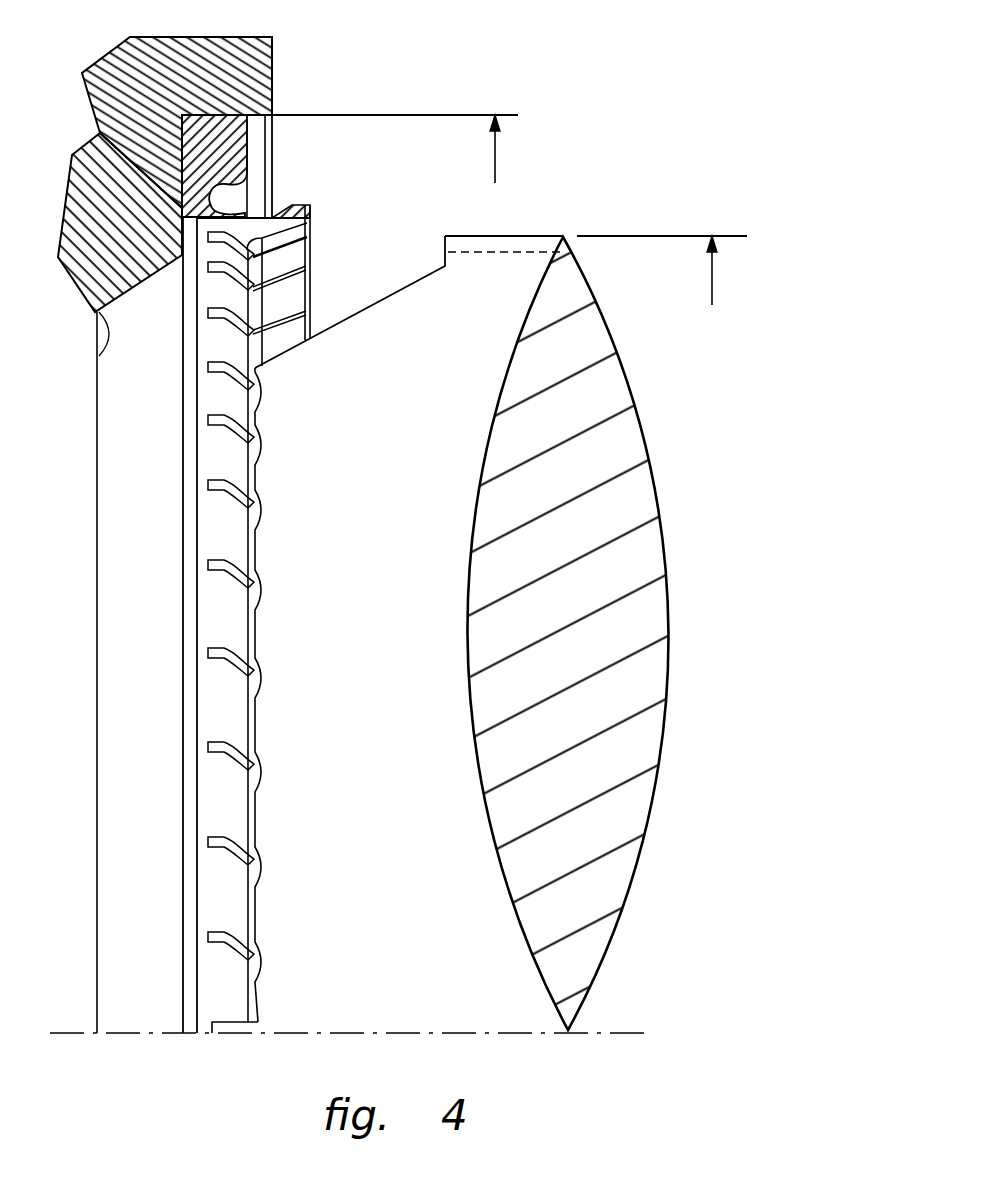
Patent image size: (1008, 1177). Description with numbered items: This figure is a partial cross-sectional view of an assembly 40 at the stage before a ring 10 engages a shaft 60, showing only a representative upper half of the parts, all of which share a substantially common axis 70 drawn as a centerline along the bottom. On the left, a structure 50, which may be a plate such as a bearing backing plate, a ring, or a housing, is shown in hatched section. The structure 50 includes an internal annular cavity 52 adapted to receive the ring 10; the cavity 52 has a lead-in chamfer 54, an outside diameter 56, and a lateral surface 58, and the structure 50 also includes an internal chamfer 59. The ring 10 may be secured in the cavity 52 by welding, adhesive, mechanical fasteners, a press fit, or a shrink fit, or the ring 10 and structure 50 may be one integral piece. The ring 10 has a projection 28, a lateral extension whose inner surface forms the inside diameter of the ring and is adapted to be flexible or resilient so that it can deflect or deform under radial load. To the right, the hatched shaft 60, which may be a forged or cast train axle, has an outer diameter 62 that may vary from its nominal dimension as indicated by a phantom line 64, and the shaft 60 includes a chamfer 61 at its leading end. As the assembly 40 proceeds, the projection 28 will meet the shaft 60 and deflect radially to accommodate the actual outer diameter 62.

The ring 10 is at (300, 184).
The projection 28 is at (312, 212).
The assembly 40 is at (553, 81).
The structure 50 is at (165, 36).
The internal annular cavity 52 is at (230, 112).
The lead-in chamfer 54 is at (272, 116).
The outside diameter 56 is at (497, 155).
The lateral surface 58 is at (178, 206).
The internal chamfer 59 is at (93, 331).
The shaft 60 is at (666, 528).
The chamfer 61 is at (346, 321).
The outer diameter 62 is at (712, 282).
The phantom line 64 is at (492, 255).
The common axis 70 is at (310, 1036).